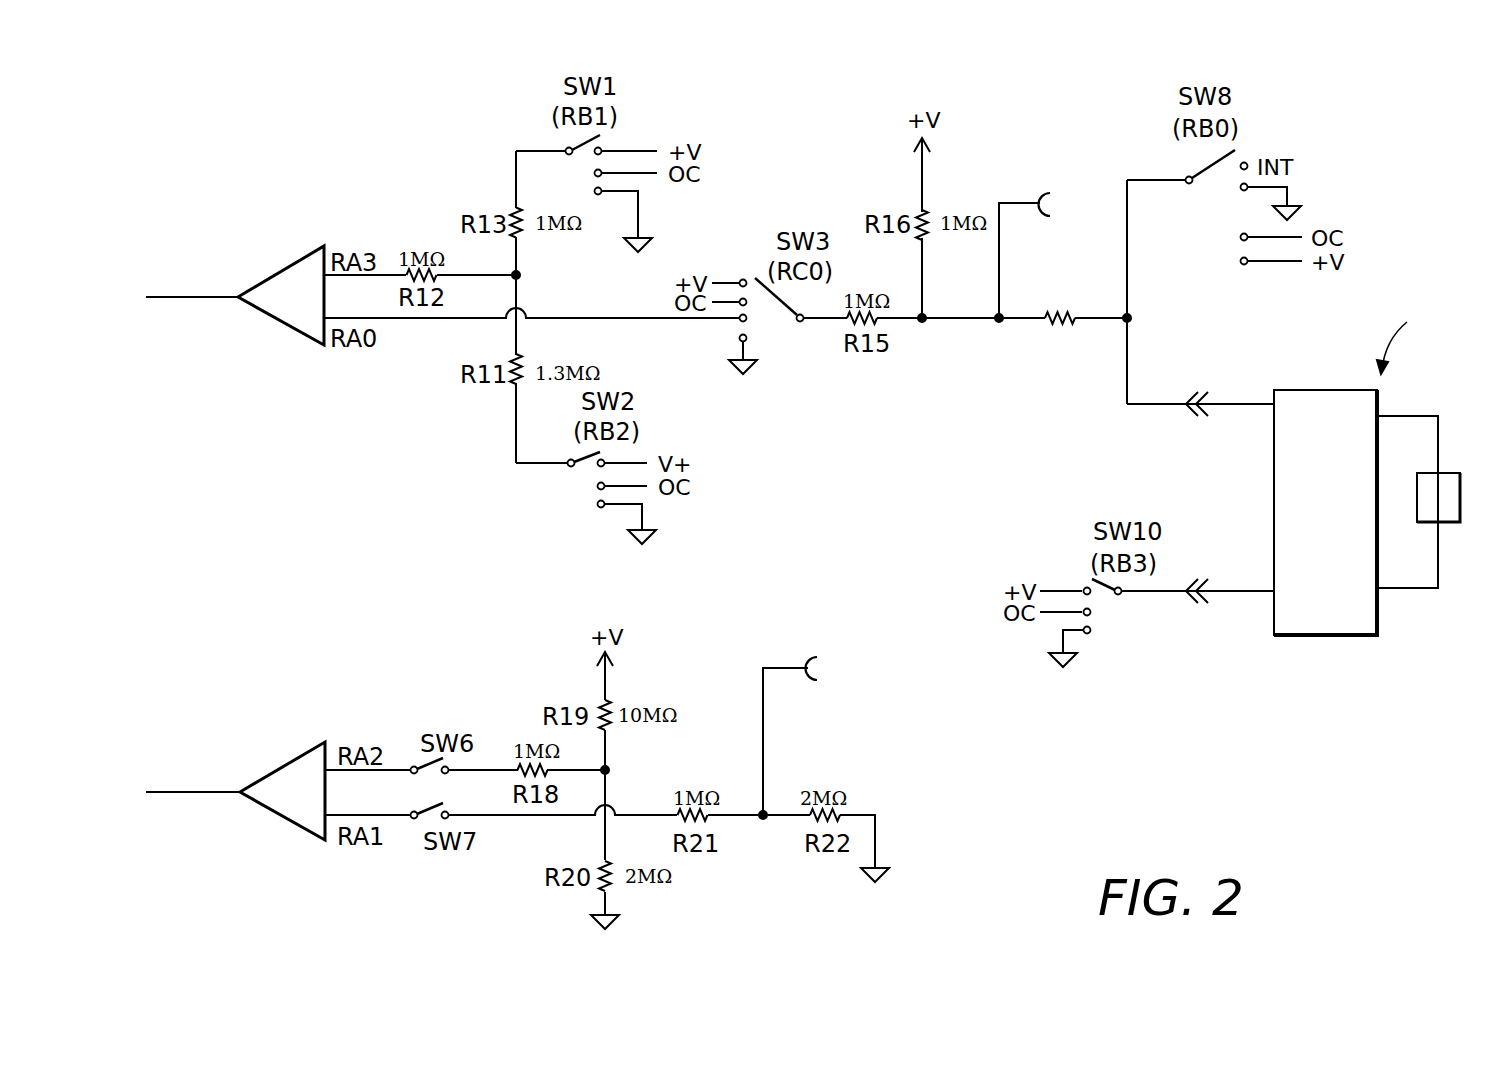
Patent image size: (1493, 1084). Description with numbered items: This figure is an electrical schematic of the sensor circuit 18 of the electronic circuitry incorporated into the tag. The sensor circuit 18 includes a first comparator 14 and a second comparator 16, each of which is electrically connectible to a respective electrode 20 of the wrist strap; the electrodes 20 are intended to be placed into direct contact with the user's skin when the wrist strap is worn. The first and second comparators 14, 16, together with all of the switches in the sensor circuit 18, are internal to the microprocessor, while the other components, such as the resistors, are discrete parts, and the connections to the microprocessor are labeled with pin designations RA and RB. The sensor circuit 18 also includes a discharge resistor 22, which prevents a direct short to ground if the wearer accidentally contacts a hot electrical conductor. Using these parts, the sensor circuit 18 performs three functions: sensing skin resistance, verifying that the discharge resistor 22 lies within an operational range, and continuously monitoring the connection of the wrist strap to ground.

The first comparator 14 is at (286, 247).
The second comparator 16 is at (289, 749).
The sensor circuit 18 is at (1160, 741).
The electrode 20 is at (1092, 197).
The discharge resistor 22 is at (1047, 322).